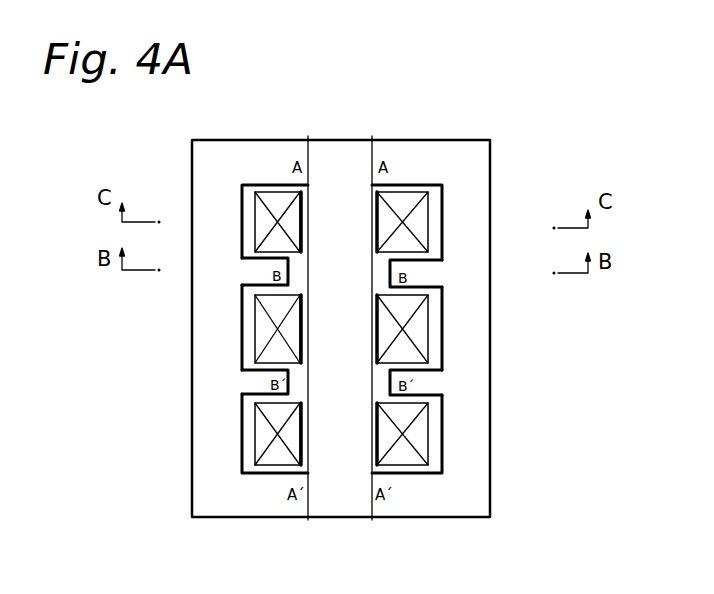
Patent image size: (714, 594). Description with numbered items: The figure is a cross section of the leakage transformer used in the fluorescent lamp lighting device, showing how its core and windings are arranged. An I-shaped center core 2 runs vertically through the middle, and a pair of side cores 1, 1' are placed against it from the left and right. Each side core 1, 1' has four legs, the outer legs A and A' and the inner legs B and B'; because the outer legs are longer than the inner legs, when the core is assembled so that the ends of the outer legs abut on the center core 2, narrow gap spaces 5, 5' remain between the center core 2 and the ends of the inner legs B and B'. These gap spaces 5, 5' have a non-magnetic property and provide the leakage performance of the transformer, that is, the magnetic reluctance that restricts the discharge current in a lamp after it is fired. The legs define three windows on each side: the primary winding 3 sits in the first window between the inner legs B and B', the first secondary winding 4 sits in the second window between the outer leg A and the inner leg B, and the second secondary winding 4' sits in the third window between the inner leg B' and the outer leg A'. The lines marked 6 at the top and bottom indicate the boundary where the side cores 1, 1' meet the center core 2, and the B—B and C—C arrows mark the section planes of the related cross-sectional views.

The side core 1 is at (233, 328).
The side core 1' is at (451, 328).
The center core 2 is at (345, 152).
The primary winding 3 is at (428, 332).
The first secondary winding 4 is at (447, 220).
The second secondary winding 4' is at (454, 434).
The gap space 5 is at (338, 292).
The gap space 5' is at (343, 399).
The boundary line 6 is at (308, 140).